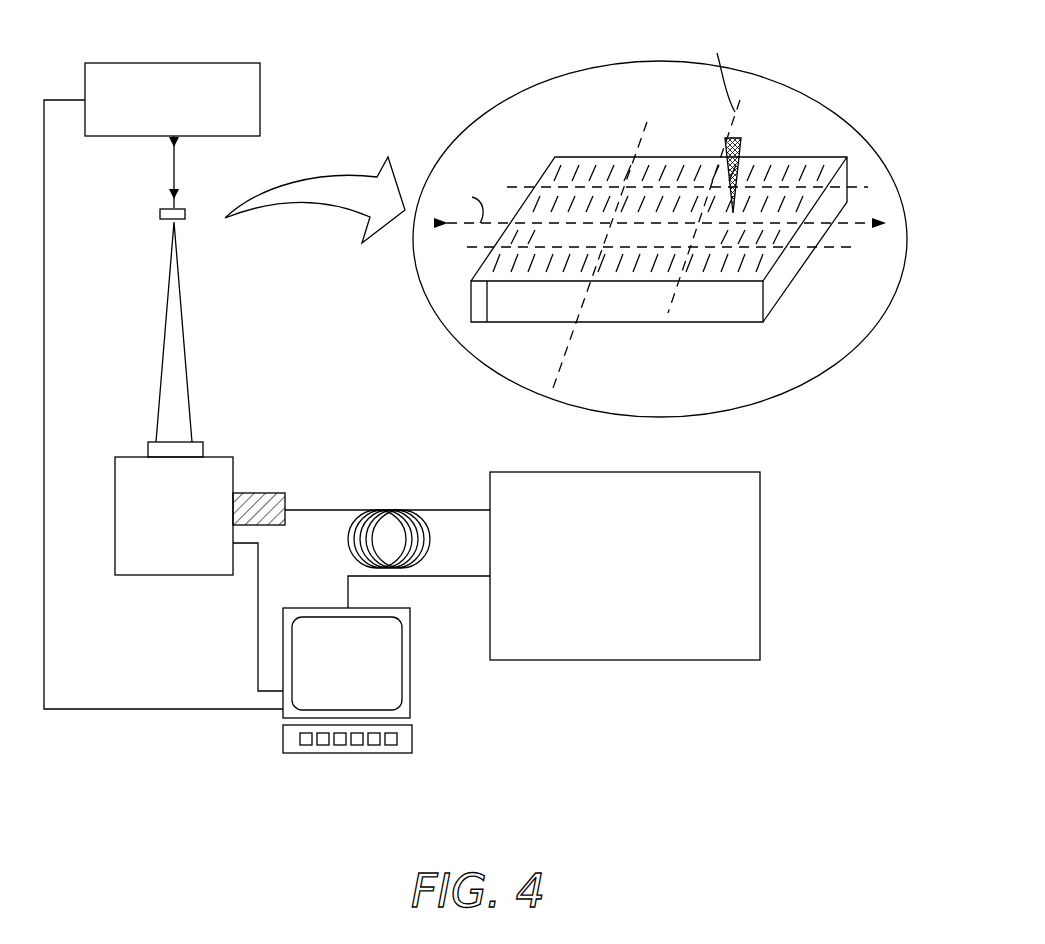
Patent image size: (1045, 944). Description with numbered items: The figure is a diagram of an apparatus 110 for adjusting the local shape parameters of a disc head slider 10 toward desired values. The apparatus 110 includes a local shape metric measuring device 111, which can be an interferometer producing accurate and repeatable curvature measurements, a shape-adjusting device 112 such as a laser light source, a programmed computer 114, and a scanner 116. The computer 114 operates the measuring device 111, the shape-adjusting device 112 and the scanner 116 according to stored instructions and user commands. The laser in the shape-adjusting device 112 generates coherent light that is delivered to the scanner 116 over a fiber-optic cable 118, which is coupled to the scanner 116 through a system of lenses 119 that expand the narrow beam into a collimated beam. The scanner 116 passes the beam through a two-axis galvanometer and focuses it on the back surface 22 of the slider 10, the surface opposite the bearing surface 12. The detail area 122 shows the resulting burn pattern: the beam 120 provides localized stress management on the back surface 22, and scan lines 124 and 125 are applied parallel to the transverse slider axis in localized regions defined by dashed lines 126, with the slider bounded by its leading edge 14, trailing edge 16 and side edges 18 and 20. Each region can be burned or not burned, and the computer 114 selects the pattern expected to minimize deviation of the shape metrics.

The local shape metric measuring device 111 is at (263, 83).
The disc head slider 10 is at (130, 200).
The bearing surface 12 is at (182, 208).
The back surface 22 is at (168, 221).
The beam 120 is at (162, 368).
The scanner 116 is at (158, 577).
The system of lenses 119 is at (248, 492).
The fiber-optic cable 118 is at (395, 510).
The programmed computer 114 is at (410, 688).
The shape-adjusting device 112 is at (628, 660).
The apparatus 110 is at (572, 740).
The detail area 122 is at (523, 88).
The leading edge 14 is at (770, 292).
The trailing edge 16 is at (482, 268).
The scan line 124 is at (587, 167).
The dashed lines 126 is at (647, 122).
The side edge 18 is at (682, 124).
The side edge 20 is at (573, 315).
The scan line 125 is at (667, 267).